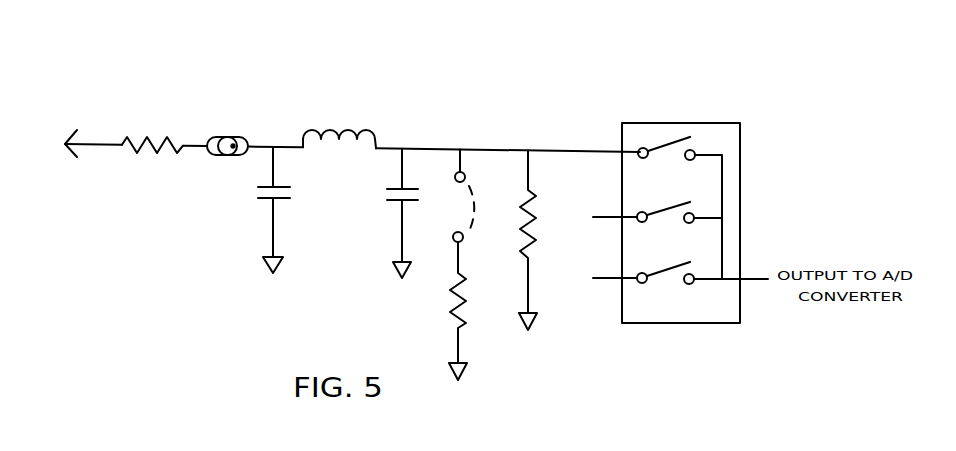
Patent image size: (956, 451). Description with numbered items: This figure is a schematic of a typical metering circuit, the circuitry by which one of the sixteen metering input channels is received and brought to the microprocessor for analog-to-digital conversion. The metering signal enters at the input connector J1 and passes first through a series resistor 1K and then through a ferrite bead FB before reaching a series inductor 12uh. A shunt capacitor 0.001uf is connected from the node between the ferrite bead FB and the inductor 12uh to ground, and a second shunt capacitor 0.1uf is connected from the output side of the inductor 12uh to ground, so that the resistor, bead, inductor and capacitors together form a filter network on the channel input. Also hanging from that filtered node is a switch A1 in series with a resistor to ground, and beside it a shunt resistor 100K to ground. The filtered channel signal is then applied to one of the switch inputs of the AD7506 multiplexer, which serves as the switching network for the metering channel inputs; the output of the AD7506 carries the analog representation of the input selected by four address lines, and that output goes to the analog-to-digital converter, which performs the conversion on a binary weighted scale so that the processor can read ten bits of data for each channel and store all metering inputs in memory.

The input connector J1 is at (56, 143).
The 1K series resistor 1K is at (152, 134).
The ferrite bead FB is at (227, 135).
The 12 uH inductor 12uh is at (339, 131).
The 0.001 uF capacitor 0.001uf is at (233, 210).
The 0.1 uF capacitor 0.1uf is at (375, 213).
The switch A1 with series resistor A1 is at (461, 265).
The 100K resistor 100K is at (550, 240).
The multiplexer AD7506 is at (680, 188).